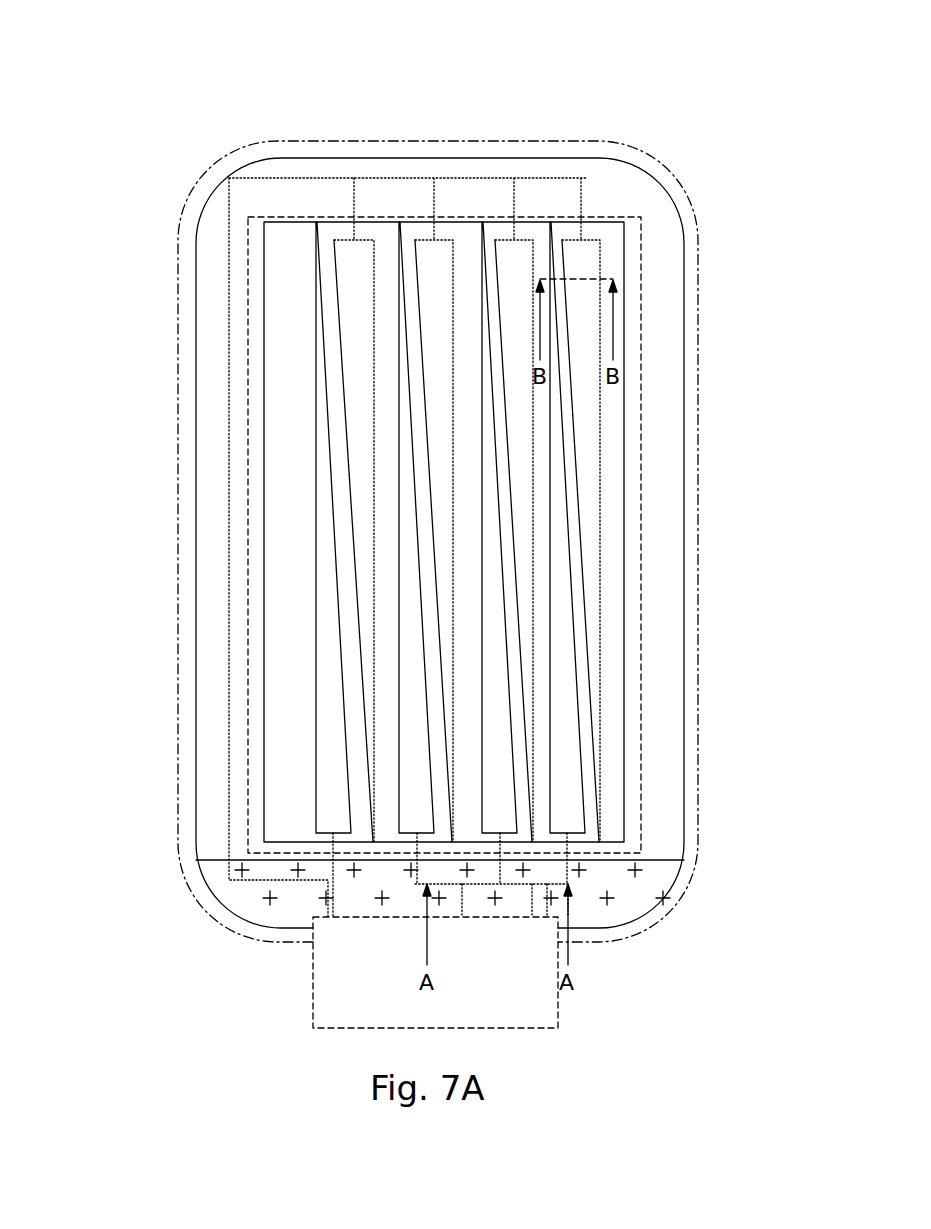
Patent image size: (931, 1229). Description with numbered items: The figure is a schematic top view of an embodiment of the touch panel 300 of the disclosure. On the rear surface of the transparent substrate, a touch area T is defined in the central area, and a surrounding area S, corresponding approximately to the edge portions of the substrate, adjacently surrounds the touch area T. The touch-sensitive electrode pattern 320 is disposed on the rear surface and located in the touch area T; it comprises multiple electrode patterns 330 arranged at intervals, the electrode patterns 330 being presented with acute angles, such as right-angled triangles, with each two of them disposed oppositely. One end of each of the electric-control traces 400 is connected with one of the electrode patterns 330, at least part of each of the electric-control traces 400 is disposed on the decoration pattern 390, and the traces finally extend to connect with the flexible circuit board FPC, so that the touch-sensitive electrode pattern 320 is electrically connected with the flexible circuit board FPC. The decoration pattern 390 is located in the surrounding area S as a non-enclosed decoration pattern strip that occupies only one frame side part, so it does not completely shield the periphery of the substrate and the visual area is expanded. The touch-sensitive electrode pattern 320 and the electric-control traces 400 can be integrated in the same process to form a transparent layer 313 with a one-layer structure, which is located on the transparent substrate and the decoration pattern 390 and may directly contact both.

The touch panel 300 is at (90, 123).
The surrounding area S is at (727, 158).
The touch area T is at (618, 189).
The transparent layer 313 is at (538, 547).
The touch-sensitive electrode pattern 320 is at (660, 648).
The electrode patterns 330 is at (557, 541).
The electric-control traces 400 is at (600, 851).
The decoration pattern 390 is at (688, 912).
The flexible circuit board FPC is at (360, 1005).